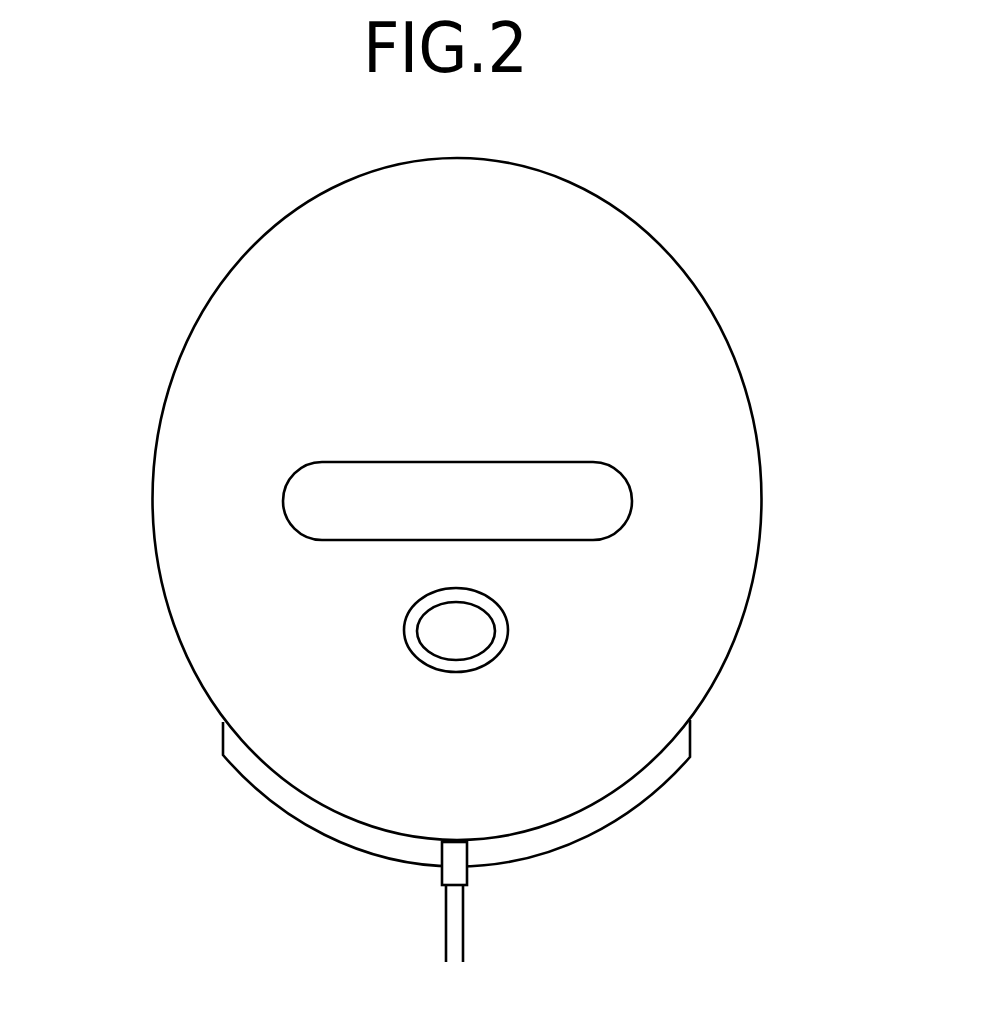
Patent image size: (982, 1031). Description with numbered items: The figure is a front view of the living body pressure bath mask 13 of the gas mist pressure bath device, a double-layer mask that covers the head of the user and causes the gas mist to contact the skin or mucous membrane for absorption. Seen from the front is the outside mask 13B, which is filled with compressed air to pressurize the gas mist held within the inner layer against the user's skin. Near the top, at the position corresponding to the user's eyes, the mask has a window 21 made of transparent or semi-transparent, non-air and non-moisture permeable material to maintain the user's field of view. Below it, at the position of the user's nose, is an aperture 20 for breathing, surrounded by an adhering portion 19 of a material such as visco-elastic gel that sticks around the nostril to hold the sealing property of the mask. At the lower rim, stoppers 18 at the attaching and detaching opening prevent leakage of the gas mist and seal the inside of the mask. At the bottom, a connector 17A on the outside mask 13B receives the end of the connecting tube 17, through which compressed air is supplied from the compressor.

The living body pressure bath mask 13 is at (698, 238).
The outside mask 13B is at (707, 603).
The connecting tube 17 is at (445, 910).
The connector 17A is at (438, 853).
The stopper 18 is at (685, 738).
The adhering portion 19 is at (448, 629).
The aperture 20 is at (430, 668).
The window 21 is at (283, 500).